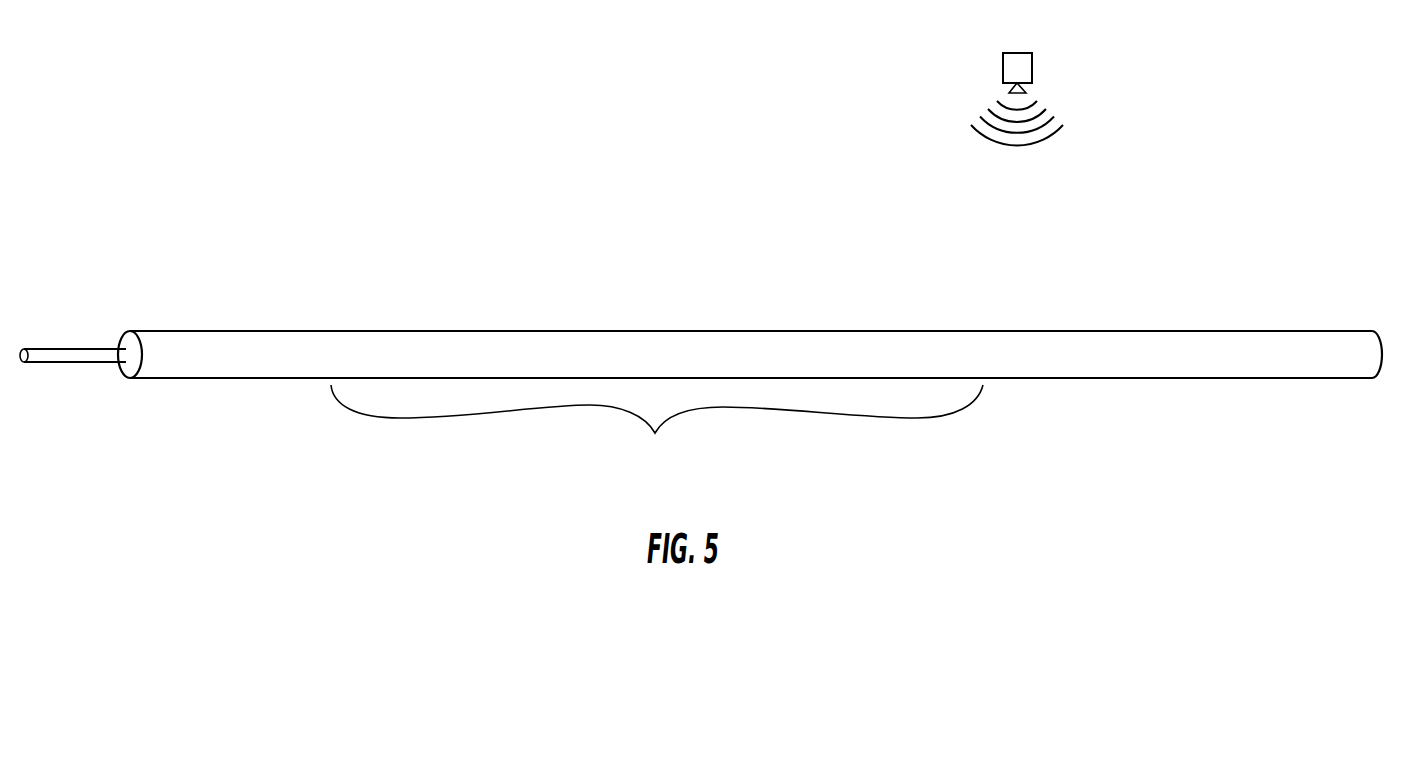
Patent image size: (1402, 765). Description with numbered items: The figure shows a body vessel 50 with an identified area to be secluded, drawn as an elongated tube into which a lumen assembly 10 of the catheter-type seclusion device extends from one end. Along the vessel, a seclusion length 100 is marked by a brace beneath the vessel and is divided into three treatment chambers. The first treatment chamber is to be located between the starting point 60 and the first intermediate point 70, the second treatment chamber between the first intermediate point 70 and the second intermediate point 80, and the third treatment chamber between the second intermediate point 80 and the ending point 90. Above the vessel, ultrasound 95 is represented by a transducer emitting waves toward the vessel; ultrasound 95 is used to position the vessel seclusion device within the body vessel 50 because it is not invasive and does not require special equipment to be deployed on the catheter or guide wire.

The lumen assembly 10 is at (58, 367).
The body vessel 50 is at (1048, 379).
The starting point 60 is at (1013, 329).
The first intermediate point 70 is at (852, 329).
The second intermediate point 80 is at (725, 329).
The ending point 90 is at (387, 329).
The ultrasound 95 is at (1003, 57).
The seclusion length 100 is at (657, 429).